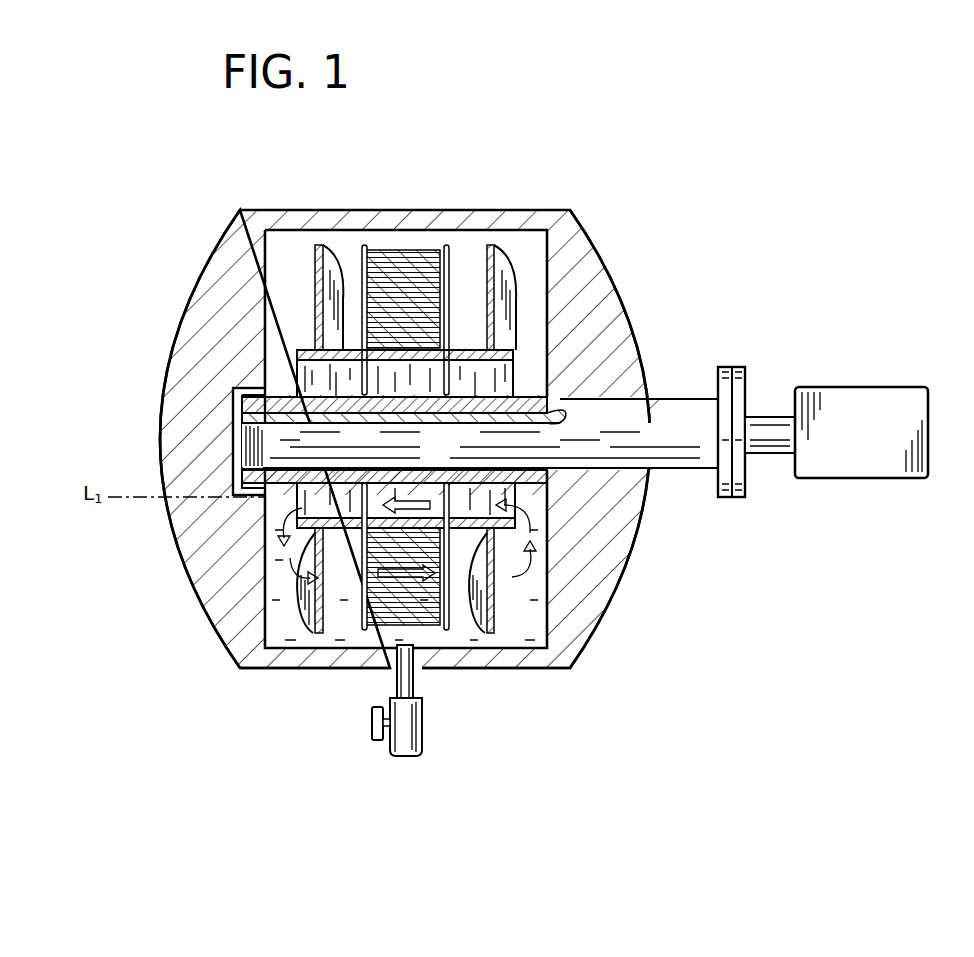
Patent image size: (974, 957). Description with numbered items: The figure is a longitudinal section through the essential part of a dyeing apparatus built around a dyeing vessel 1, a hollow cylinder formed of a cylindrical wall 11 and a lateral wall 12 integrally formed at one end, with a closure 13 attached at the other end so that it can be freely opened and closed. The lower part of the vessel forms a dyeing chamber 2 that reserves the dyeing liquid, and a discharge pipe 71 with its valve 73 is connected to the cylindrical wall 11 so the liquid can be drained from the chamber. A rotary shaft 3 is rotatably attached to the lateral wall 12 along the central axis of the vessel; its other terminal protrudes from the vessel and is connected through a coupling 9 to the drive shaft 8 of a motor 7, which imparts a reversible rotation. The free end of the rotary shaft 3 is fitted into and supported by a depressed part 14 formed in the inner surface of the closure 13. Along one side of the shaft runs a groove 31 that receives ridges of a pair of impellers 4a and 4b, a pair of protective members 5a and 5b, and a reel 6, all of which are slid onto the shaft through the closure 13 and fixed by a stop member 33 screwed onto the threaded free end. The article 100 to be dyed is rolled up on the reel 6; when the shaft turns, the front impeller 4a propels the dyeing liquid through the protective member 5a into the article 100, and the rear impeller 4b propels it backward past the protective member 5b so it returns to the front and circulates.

The dyeing vessel 1 is at (596, 214).
The dyeing chamber 2 is at (281, 632).
The rotary shaft 3 is at (684, 408).
The impeller 4a is at (320, 245).
The impeller 4b is at (489, 245).
The protective member 5a is at (357, 633).
The protective member 5b is at (446, 632).
The reel 6 is at (438, 331).
The motor 7 is at (845, 410).
The drive shaft 8 is at (772, 426).
The coupling 9 is at (722, 492).
The cylindrical wall 11 is at (507, 669).
The lateral wall 12 is at (605, 577).
The closure 13 is at (205, 288).
The depressed part 14 is at (242, 436).
The groove 31 is at (258, 408).
The stop member 33 is at (252, 388).
The discharge pipe 71 is at (423, 740).
The valve 73 is at (372, 735).
The article 100 is at (416, 642).